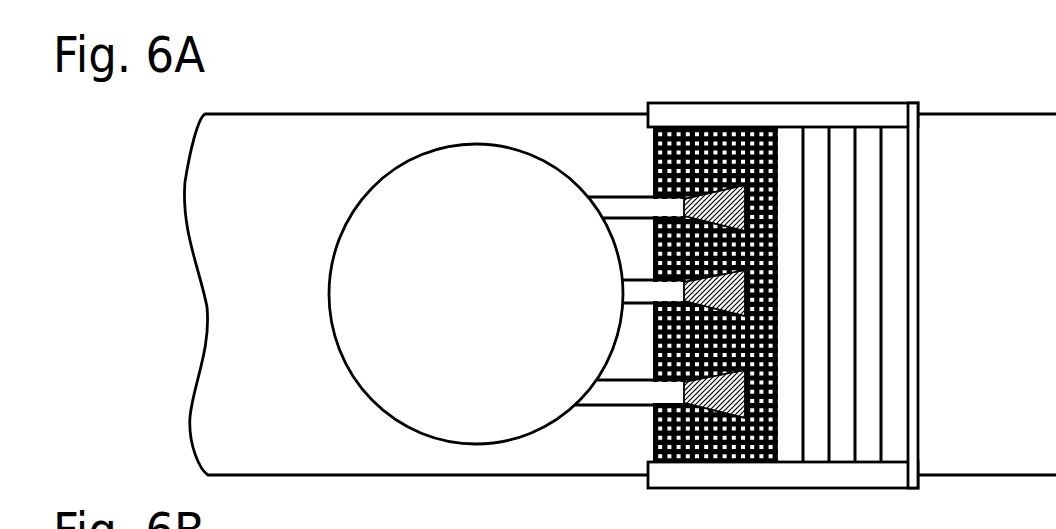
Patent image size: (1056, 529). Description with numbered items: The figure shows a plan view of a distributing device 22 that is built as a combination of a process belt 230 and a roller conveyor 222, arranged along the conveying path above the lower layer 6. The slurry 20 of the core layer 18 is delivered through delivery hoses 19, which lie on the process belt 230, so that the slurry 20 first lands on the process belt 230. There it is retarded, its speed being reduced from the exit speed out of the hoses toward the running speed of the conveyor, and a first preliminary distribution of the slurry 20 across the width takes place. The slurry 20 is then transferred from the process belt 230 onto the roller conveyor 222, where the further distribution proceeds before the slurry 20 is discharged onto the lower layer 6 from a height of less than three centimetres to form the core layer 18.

The lower layer 6 is at (298, 127).
The core layer 18 is at (382, 190).
The delivery hoses 19 is at (630, 208).
The slurry 20 is at (745, 186).
The distributing device 22 is at (926, 491).
The roller conveyor 222 is at (831, 127).
The process belt 230 is at (702, 130).